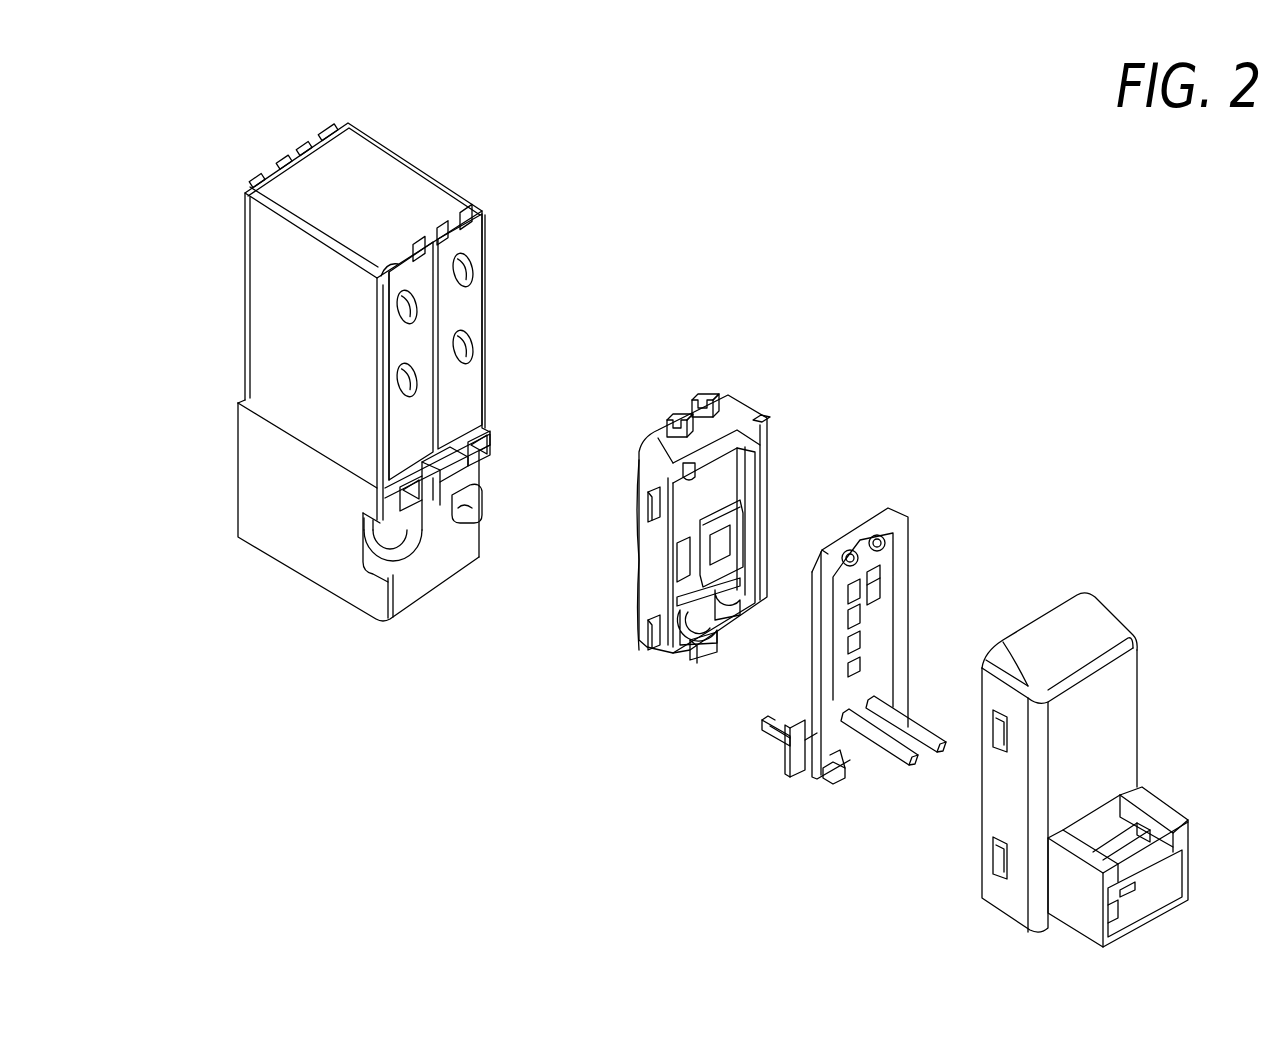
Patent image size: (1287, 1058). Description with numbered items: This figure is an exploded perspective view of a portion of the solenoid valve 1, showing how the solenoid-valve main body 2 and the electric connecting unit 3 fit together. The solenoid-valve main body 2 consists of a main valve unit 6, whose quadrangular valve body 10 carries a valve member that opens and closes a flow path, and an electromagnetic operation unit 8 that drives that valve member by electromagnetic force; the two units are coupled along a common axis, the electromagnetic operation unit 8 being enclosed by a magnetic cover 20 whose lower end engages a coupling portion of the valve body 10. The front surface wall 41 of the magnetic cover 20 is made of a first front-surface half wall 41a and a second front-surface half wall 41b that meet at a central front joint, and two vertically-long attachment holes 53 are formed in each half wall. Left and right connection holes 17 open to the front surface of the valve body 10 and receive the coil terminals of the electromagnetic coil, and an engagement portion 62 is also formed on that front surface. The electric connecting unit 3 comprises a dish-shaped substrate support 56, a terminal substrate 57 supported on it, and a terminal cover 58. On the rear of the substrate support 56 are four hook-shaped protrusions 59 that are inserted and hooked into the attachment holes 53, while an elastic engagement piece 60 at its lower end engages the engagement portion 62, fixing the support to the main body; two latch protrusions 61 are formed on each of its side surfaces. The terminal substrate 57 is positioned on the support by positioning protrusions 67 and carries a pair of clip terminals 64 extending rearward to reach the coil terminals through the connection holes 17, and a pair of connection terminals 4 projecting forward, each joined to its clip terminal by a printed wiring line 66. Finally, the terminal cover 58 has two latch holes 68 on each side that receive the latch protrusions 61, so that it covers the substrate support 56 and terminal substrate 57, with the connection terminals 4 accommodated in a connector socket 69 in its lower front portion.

The solenoid valve 1 is at (895, 152).
The solenoid-valve main body 2 is at (467, 152).
The electric connecting unit 3 is at (1017, 450).
The connection terminals 4 is at (920, 730).
The main valve unit 6 is at (223, 437).
The electromagnetic operation unit 8 is at (400, 140).
The valve body 10 is at (267, 500).
The connection holes 17 is at (487, 447).
The magnetic cover 20 is at (283, 298).
The front surface wall 41 is at (593, 318).
The first front-surface half wall 41a is at (413, 410).
The second front-surface half wall 41b is at (455, 410).
The attachment holes 53 is at (400, 378).
The substrate support 56 is at (745, 447).
The terminal substrate 57 is at (897, 528).
The terminal cover 58 is at (1090, 630).
The hook-shaped protrusions 59 is at (638, 543).
The elastic engagement piece 60 is at (705, 657).
The latch protrusions 61 is at (652, 637).
The engagement portion 62 is at (473, 517).
The clip terminals 64 is at (777, 758).
The printed wiring line 66 is at (833, 618).
The positioning protrusions 67 is at (763, 427).
The latch holes 68 is at (1003, 857).
The connector socket 69 is at (1137, 900).